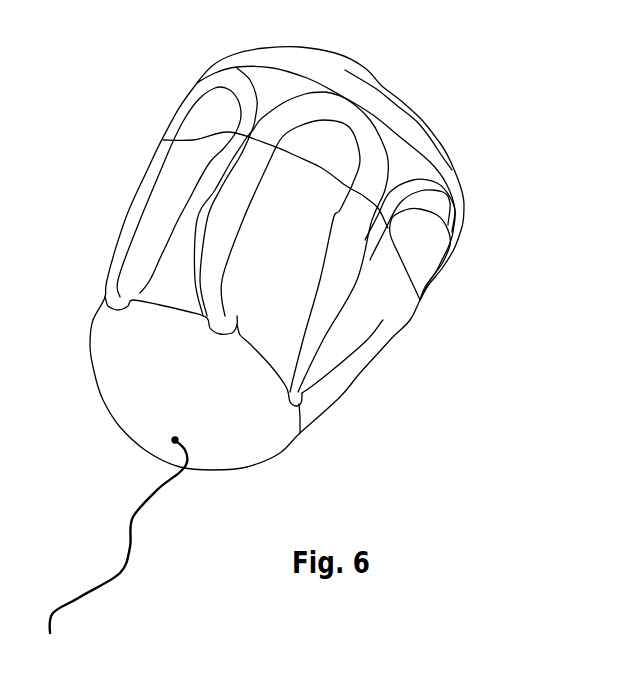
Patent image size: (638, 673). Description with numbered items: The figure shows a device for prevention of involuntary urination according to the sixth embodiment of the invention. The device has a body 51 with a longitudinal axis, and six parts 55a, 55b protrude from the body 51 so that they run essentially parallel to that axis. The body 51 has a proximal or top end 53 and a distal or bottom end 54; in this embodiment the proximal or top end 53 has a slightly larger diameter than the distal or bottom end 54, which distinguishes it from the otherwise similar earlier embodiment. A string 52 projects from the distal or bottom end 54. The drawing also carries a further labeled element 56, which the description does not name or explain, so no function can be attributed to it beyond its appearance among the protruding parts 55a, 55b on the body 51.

The body 51 is at (130, 145).
The string 52 is at (130, 547).
The proximal or top end 53 is at (343, 75).
The distal or bottom end 54 is at (138, 425).
The part 55a is at (390, 193).
The part 55b is at (407, 310).
The small loop 56 is at (413, 240).